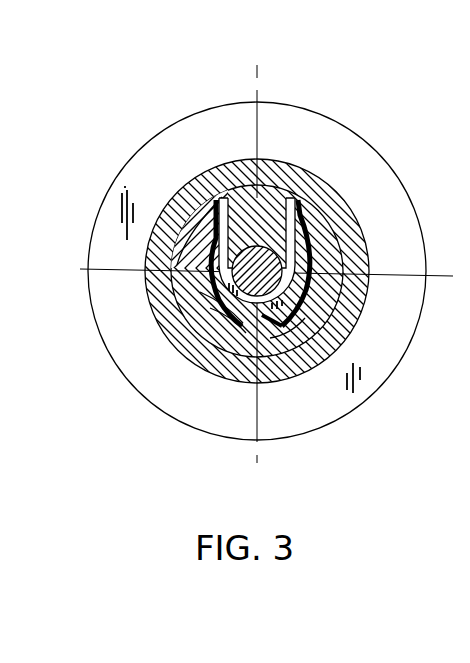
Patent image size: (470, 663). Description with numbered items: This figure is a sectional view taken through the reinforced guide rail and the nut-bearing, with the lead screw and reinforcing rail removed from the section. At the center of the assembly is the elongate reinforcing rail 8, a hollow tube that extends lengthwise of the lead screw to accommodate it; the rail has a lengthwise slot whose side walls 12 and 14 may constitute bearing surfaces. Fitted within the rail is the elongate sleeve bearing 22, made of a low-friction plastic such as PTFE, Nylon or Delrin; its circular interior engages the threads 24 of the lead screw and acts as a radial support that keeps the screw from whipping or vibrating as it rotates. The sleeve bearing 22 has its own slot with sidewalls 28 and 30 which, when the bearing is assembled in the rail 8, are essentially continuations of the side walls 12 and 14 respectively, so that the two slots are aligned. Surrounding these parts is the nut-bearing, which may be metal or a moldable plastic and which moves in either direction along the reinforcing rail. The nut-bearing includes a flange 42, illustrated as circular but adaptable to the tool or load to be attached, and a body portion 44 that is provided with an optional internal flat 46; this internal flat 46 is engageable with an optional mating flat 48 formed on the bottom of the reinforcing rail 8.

The reinforcing rail 8 is at (337, 328).
The side wall 12 is at (266, 245).
The side wall 14 is at (236, 164).
The sleeve bearing 22 is at (342, 242).
The threads 24 is at (240, 338).
The sidewall 28 is at (265, 217).
The sidewall 30 is at (252, 195).
The flange 42 is at (93, 218).
The body portion 44 is at (163, 315).
The internal flat 46 is at (285, 328).
The mating flat 48 is at (270, 336).